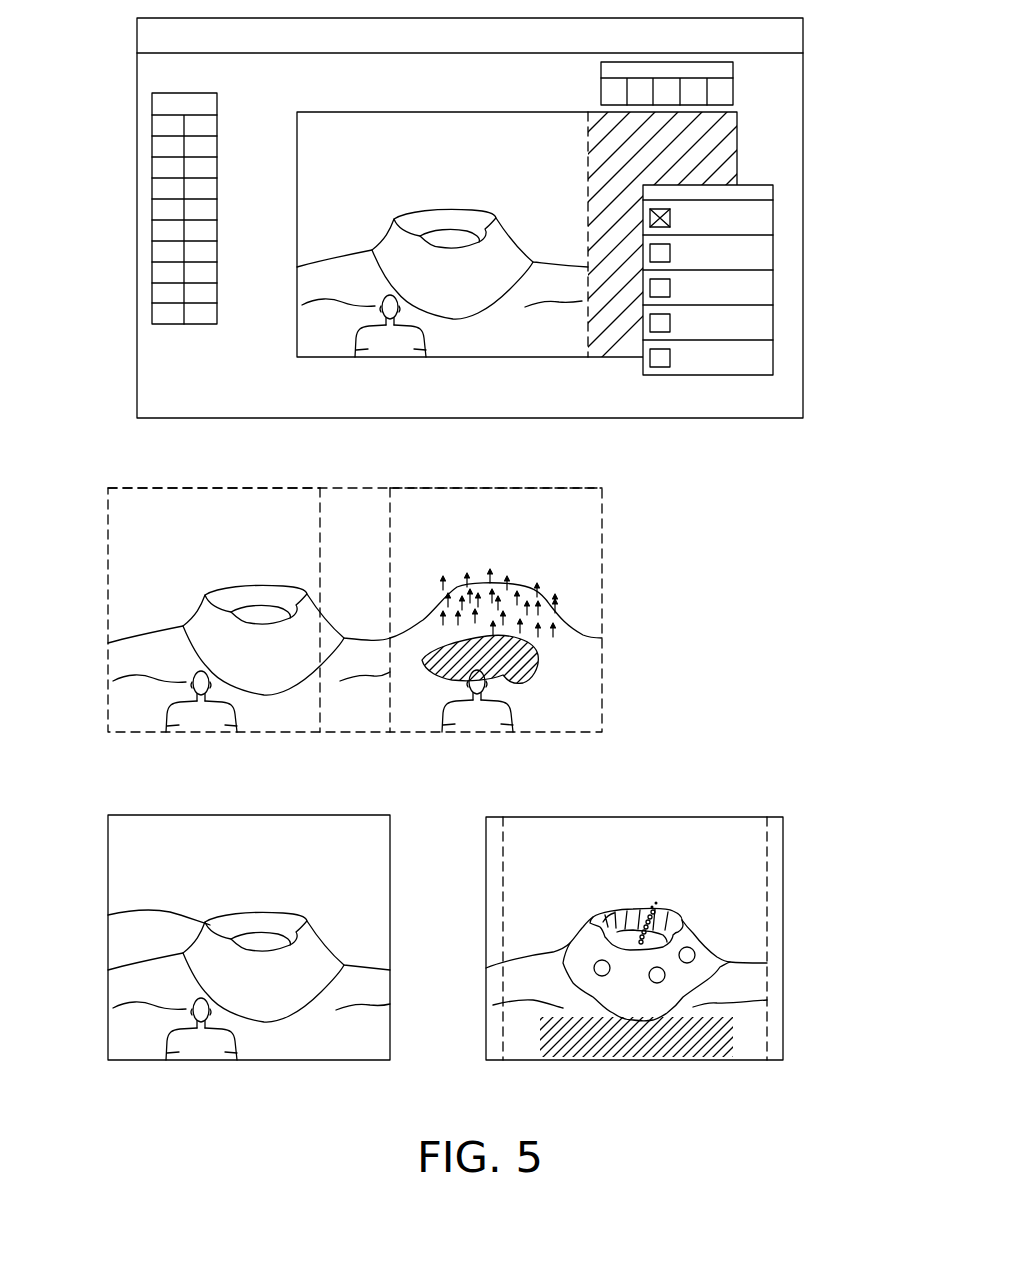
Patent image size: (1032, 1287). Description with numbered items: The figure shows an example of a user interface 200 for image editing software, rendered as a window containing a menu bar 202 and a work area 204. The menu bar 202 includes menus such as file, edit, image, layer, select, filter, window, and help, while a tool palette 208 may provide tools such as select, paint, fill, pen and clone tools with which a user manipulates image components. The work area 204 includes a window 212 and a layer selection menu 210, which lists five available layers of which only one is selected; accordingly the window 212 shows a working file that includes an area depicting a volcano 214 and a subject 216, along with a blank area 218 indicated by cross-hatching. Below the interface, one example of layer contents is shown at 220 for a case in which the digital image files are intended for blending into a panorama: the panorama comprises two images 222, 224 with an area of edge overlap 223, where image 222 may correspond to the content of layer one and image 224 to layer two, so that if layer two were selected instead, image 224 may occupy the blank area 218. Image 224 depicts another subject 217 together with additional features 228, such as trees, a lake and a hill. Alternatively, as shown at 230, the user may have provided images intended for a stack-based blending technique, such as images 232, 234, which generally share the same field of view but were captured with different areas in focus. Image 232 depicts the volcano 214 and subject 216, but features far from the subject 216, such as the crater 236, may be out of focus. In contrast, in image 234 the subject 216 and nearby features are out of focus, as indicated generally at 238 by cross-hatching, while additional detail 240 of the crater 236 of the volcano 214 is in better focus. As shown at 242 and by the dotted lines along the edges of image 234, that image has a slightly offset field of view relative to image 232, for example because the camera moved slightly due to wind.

The user interface 200 is at (805, 30).
The menu bar 202 is at (152, 31).
The work area 204 is at (385, 78).
The tool palette 208 is at (613, 69).
The layer selection menu 210 is at (773, 352).
The window 212 is at (427, 112).
The volcano 214 is at (431, 200).
The subject 216 is at (352, 338).
The another subject 217 is at (525, 714).
The blank area 218 is at (722, 154).
The example of layer contents 220 is at (632, 576).
The image 222 is at (130, 488).
The area of edge overlap 223 is at (390, 472).
The image 224 is at (497, 488).
The additional features 228 is at (513, 583).
The stack-based blending example 230 is at (722, 782).
The image 232 is at (128, 815).
The image 234 is at (486, 838).
The crater 236 is at (118, 913).
The out-of-focus region 238 is at (618, 1045).
The additional detail 240 is at (620, 899).
The offset field of view 242 is at (783, 802).